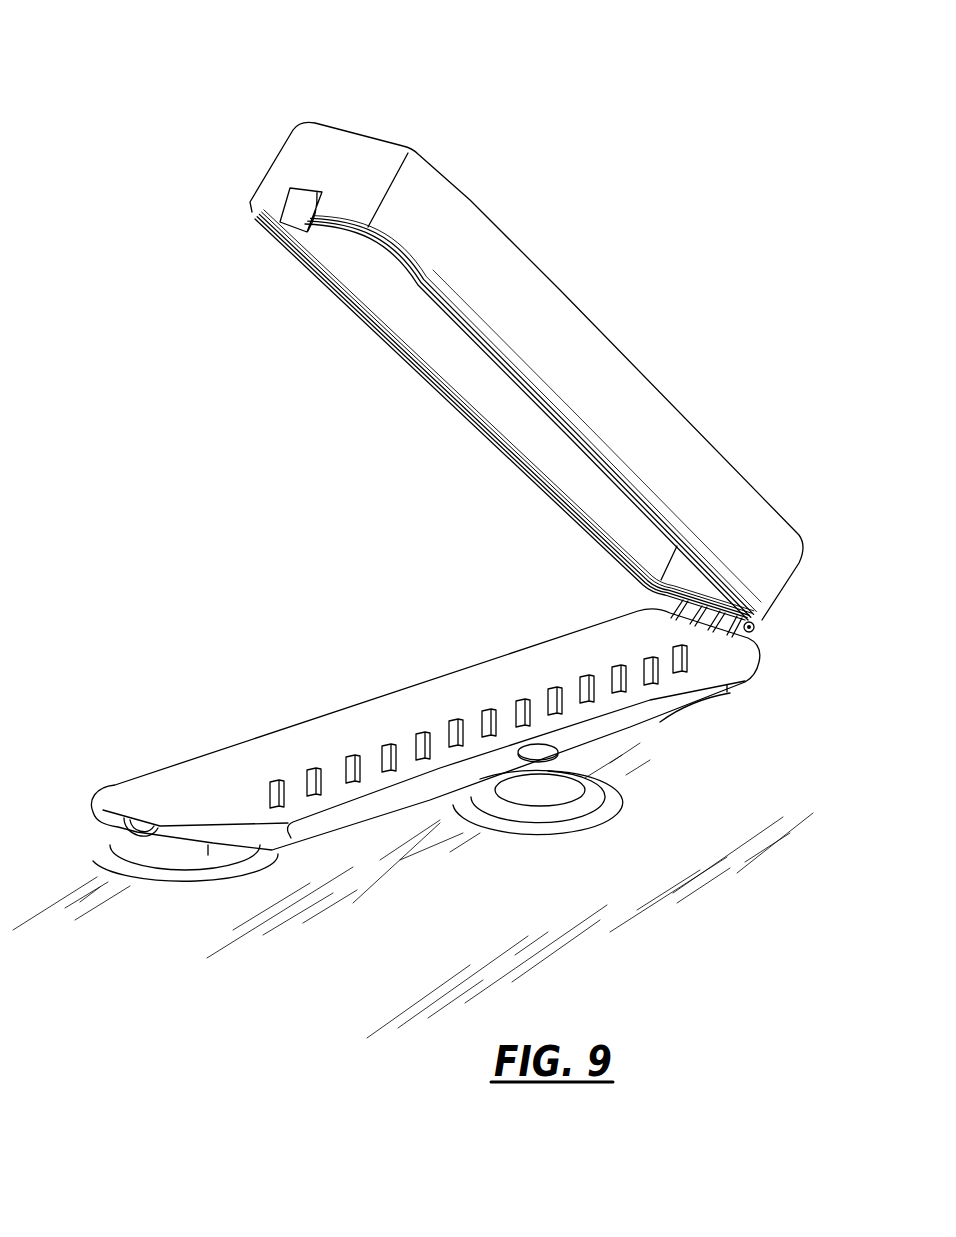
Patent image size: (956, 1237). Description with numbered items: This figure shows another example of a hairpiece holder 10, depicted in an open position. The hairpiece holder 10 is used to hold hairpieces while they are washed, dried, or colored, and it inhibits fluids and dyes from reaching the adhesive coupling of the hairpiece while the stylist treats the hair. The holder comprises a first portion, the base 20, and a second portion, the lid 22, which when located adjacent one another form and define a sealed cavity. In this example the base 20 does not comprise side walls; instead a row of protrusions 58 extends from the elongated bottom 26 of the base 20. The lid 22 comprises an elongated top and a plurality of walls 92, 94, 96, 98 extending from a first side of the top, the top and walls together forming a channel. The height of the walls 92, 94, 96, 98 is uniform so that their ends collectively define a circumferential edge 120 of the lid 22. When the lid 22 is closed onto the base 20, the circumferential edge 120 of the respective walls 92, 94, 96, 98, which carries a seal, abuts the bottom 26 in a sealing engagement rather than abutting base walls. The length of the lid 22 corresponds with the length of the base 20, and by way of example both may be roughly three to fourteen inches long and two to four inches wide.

The hairpiece holder 10 is at (204, 424).
The base 20 is at (164, 760).
The lid 22 is at (466, 178).
The bottom 26 is at (420, 710).
The protrusions 58 is at (313, 758).
The wall 92 is at (433, 348).
The wall 94 is at (787, 581).
The wall 96 is at (517, 278).
The wall 98 is at (337, 160).
The circumferential edge 120 is at (509, 393).